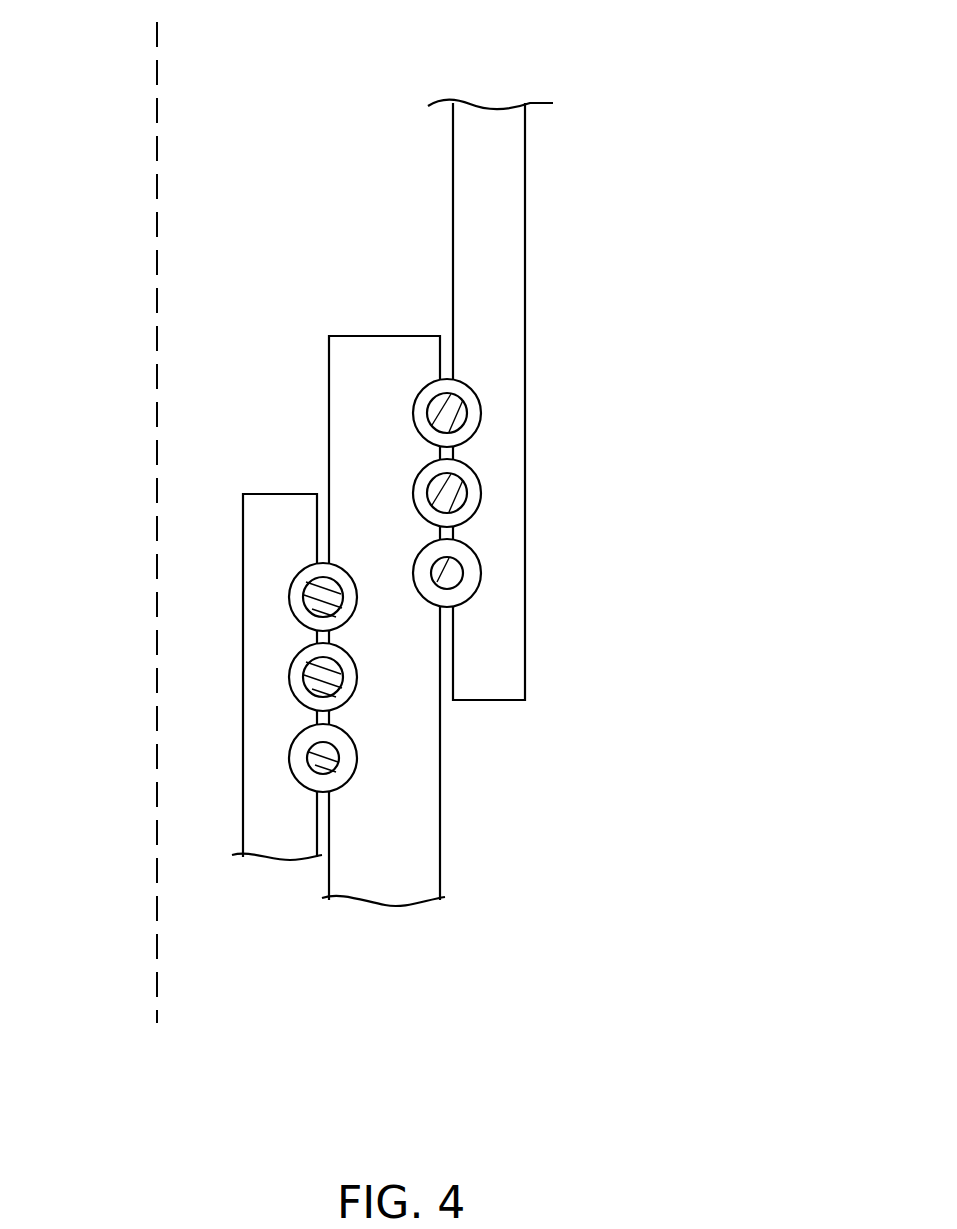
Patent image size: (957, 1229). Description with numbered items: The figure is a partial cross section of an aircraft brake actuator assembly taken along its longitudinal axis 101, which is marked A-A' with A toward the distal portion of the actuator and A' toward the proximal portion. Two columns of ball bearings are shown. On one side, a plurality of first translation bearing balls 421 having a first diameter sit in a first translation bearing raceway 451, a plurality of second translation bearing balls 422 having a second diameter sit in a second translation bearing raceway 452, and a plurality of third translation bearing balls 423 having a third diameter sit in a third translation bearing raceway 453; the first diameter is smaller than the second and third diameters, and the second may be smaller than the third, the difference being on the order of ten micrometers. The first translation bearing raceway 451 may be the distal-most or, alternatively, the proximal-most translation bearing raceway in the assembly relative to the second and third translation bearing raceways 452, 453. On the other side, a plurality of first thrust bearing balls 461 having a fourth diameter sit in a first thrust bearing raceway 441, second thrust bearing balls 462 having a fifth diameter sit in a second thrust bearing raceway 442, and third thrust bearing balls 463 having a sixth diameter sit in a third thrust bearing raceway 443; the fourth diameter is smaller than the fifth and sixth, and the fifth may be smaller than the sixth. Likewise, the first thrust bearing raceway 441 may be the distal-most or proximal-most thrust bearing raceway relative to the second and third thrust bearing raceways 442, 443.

The axis 101 is at (157, 182).
The first translation bearing balls 421 is at (450, 575).
The second translation bearing balls 422 is at (450, 497).
The third translation bearing balls 423 is at (448, 415).
The first thrust bearing raceway 441 is at (318, 786).
The second thrust bearing raceway 442 is at (318, 704).
The third thrust bearing raceway 443 is at (318, 566).
The first translation bearing raceway 451 is at (447, 598).
The second translation bearing raceway 452 is at (448, 526).
The third translation bearing raceway 453 is at (458, 384).
The first thrust bearing balls 461 is at (318, 756).
The second thrust bearing balls 462 is at (318, 676).
The third thrust bearing balls 463 is at (318, 596).